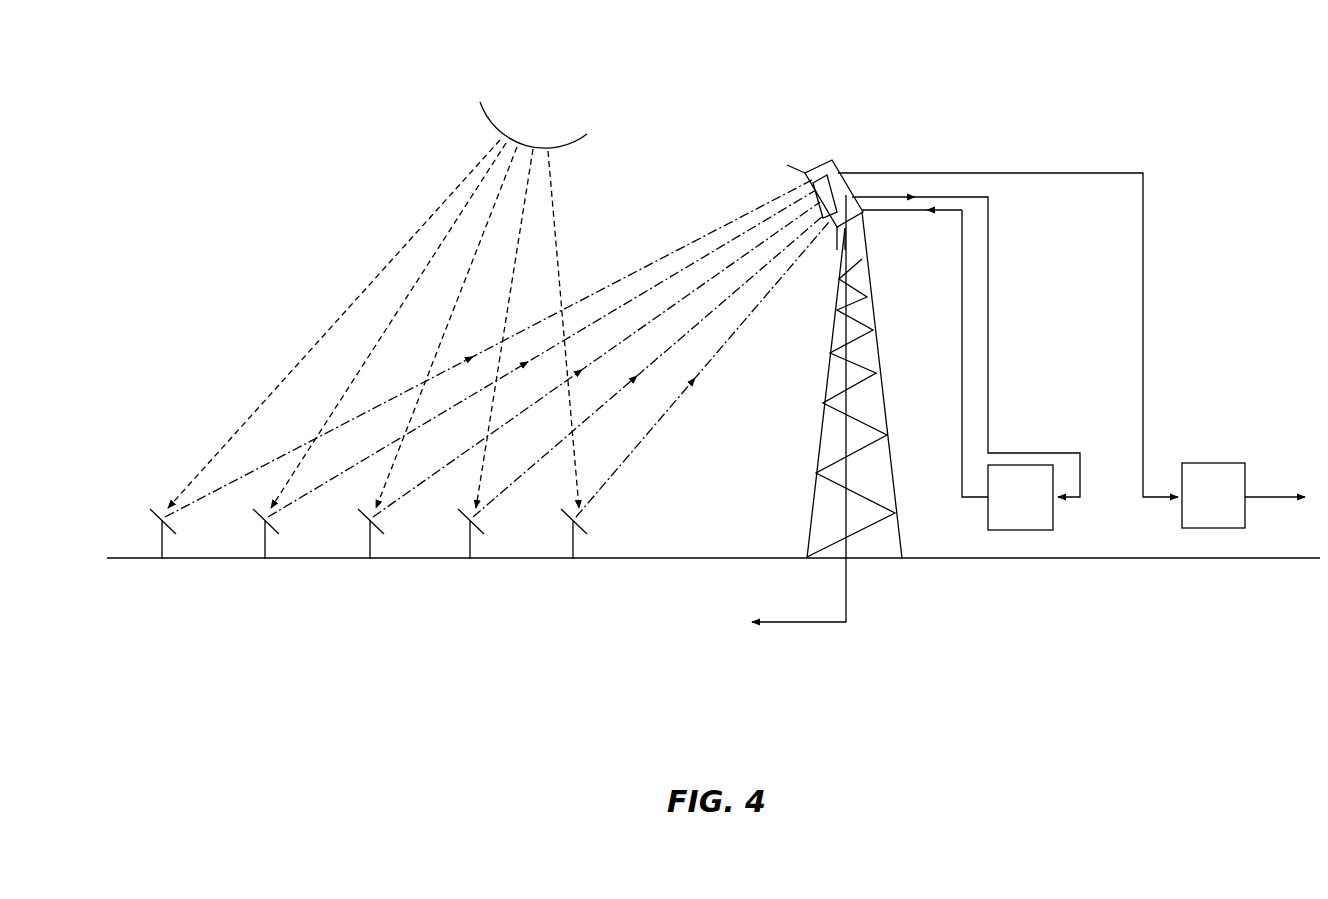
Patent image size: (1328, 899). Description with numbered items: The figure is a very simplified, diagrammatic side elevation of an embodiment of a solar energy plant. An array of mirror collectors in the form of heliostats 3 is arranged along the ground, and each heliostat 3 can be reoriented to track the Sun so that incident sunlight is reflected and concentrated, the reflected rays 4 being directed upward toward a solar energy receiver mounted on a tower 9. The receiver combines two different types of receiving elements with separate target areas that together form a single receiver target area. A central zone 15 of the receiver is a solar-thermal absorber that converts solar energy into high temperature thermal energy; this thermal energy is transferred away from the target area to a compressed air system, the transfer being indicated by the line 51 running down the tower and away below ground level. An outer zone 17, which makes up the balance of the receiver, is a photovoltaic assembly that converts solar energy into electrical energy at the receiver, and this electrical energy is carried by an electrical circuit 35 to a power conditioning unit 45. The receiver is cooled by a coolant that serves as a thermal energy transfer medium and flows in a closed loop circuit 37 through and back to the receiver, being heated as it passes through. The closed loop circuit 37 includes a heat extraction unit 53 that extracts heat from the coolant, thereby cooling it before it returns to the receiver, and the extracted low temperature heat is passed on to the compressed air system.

The heliostat 3 is at (333, 321).
The reflected solar radiation 4 is at (655, 266).
The tower 9 is at (883, 385).
The central zone 15 is at (838, 170).
The outer zone 17 is at (832, 160).
The electrical circuit 35 is at (1152, 276).
The closed loop circuit 37 is at (996, 307).
The power conditioning unit 45 is at (1210, 463).
The line 51 is at (803, 623).
The heat extraction unit 53 is at (1020, 520).